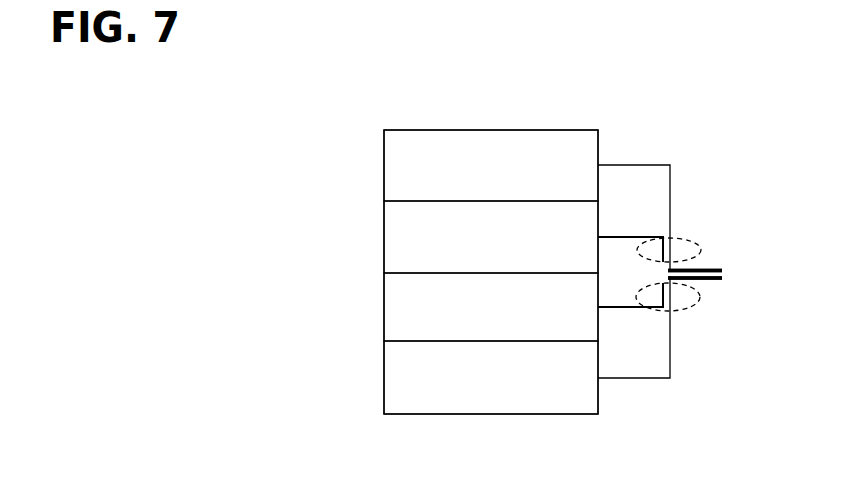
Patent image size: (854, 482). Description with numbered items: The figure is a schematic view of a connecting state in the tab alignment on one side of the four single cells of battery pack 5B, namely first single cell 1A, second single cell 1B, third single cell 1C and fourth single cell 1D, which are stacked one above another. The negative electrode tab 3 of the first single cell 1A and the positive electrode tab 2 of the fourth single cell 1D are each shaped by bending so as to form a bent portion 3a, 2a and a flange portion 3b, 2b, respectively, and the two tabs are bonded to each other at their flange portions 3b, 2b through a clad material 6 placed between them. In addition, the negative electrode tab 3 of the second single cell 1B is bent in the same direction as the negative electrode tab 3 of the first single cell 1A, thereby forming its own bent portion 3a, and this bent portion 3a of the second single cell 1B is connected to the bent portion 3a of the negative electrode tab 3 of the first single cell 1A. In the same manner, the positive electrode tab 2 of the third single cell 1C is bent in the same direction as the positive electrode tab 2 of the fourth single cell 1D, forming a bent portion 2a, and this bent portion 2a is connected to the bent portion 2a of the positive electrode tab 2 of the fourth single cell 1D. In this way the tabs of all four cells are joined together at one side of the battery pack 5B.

The battery pack 5B is at (356, 131).
The first single cell 1A is at (397, 163).
The second single cell 1B is at (403, 238).
The third single cell 1C is at (405, 308).
The fourth single cell 1D is at (405, 382).
The negative electrode tab 3 is at (633, 165).
The bent portion 3a is at (670, 213).
The flange portion 3b is at (712, 268).
The clad material 6 is at (722, 274).
The positive electrode tab 2 is at (630, 307).
The bent portion 2a is at (663, 292).
The flange portion 2b is at (722, 280).